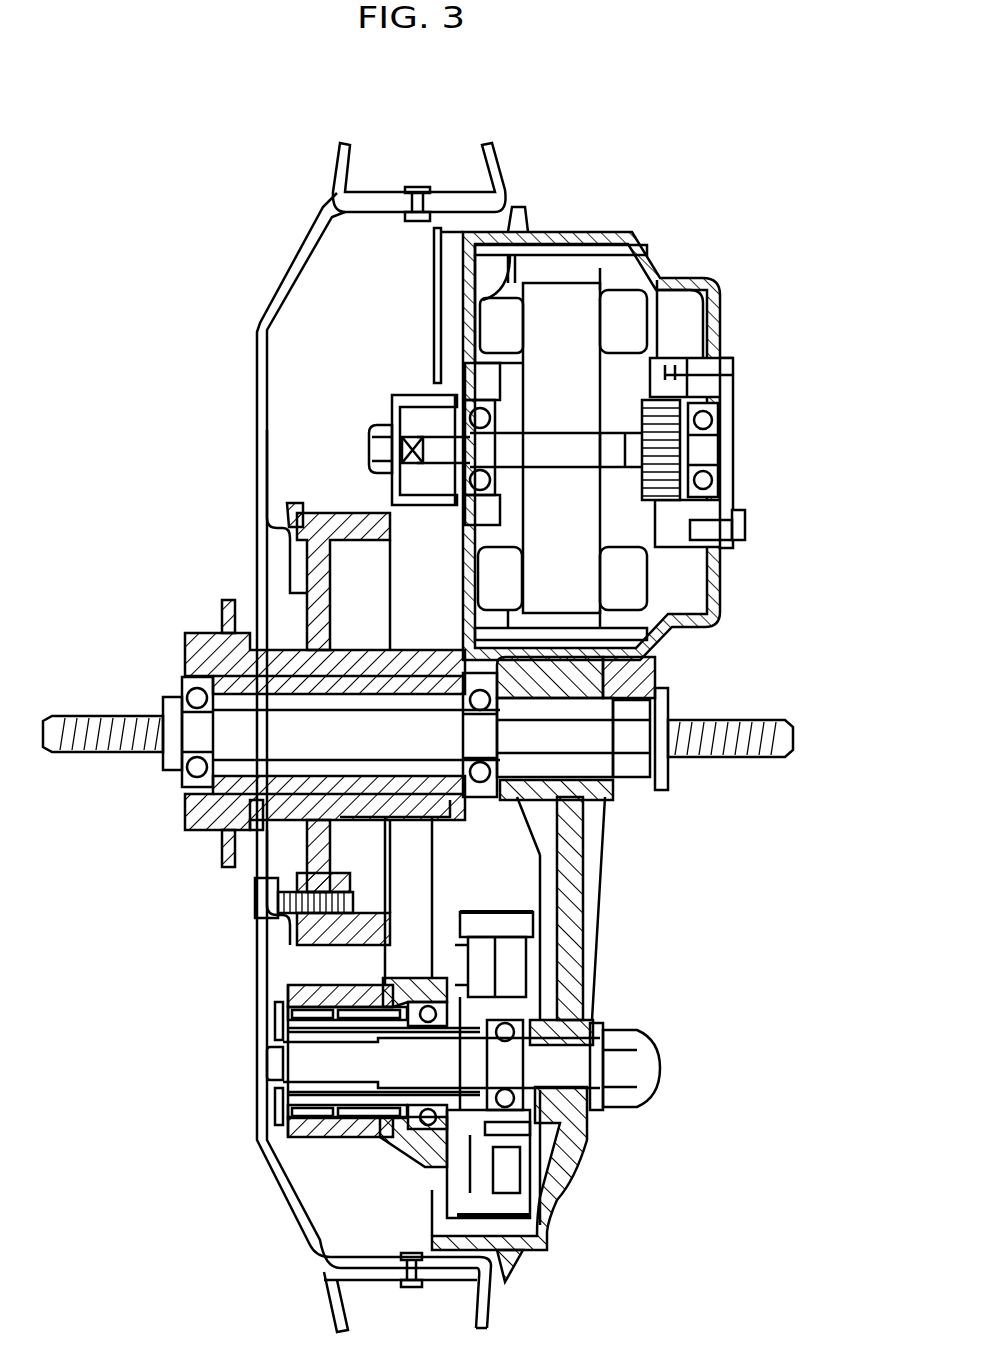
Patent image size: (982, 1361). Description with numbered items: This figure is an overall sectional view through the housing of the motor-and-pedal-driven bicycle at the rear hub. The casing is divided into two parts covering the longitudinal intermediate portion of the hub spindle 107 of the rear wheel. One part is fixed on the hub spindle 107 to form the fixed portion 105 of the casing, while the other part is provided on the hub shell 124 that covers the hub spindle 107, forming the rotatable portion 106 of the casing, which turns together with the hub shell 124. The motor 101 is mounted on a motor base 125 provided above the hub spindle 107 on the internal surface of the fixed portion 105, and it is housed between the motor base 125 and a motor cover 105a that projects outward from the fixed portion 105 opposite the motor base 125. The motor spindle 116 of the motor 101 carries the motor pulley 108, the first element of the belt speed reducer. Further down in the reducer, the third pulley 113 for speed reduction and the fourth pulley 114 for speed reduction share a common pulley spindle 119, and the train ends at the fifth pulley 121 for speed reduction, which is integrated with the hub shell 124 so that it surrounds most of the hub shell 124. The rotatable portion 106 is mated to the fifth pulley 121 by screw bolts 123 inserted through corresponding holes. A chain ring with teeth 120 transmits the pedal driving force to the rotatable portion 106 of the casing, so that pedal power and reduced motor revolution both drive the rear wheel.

The motor 101 is at (578, 333).
The fixed portion of the casing 105 is at (567, 893).
The motor cover 105a is at (718, 575).
The rotatable portion of the casing 106 is at (257, 360).
The hub spindle 107 is at (73, 733).
The motor pulley 108 is at (391, 398).
The third pulley for speed reduction 113 is at (547, 1237).
The fourth pulley for speed reduction 114 is at (310, 1137).
The motor spindle 116 is at (490, 443).
The pulley spindle 119 is at (308, 1057).
The chain ring with teeth (sprocket) 120 is at (193, 650).
The fifth pulley for speed reduction 121 is at (287, 527).
The screw bolts 123 is at (293, 567).
The hub shell 124 is at (259, 818).
The motor base 125 is at (463, 303).